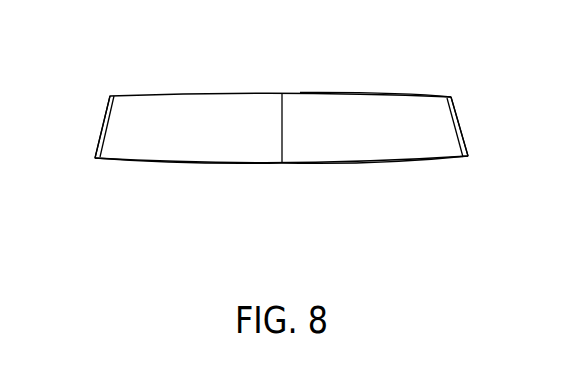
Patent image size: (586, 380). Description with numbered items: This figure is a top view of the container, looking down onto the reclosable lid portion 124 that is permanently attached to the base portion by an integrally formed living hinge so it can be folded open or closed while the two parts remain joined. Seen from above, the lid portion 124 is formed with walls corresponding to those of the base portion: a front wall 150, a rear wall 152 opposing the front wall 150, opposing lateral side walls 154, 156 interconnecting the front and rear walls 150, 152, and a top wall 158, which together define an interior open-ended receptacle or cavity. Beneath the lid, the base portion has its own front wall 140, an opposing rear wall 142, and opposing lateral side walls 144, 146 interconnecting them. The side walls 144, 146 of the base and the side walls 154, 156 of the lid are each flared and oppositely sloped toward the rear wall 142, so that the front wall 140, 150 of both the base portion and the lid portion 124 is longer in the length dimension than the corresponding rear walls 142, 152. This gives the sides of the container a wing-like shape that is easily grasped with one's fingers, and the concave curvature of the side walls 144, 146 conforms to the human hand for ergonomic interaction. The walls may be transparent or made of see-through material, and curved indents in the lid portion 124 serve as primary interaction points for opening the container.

The lid portion 124 is at (181, 84).
The front wall 140 is at (375, 164).
The rear wall 142 is at (355, 93).
The lateral side wall 144 is at (99, 133).
The lateral side wall 146 is at (460, 127).
The front wall 150 is at (221, 167).
The rear wall 152 is at (252, 93).
The lateral side wall 154 is at (104, 112).
The lateral side wall 156 is at (467, 144).
The top wall 158 is at (303, 145).